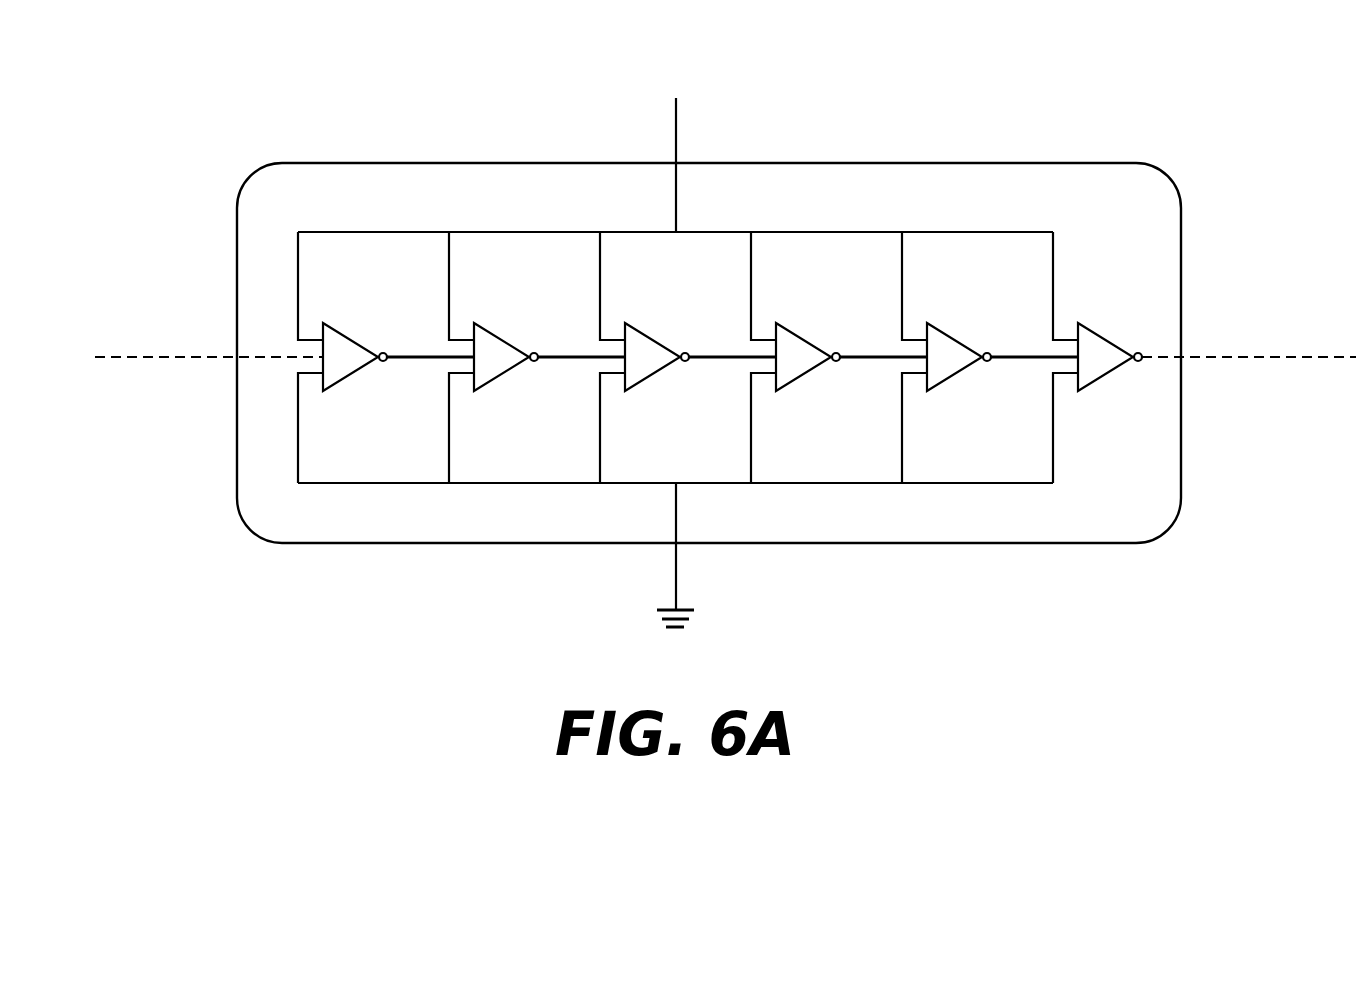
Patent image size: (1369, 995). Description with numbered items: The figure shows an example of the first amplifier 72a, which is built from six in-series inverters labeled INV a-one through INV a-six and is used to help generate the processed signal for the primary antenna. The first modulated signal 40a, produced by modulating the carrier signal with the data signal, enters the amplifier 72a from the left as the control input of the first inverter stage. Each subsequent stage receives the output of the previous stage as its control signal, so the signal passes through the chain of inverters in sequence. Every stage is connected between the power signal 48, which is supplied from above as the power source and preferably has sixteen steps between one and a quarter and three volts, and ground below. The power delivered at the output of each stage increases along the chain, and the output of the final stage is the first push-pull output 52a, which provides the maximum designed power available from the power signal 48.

The power signal 48 is at (673, 132).
The first amplifier 72a is at (898, 207).
The first modulated signal 40a is at (145, 360).
The first push-pull output 52a is at (1268, 359).